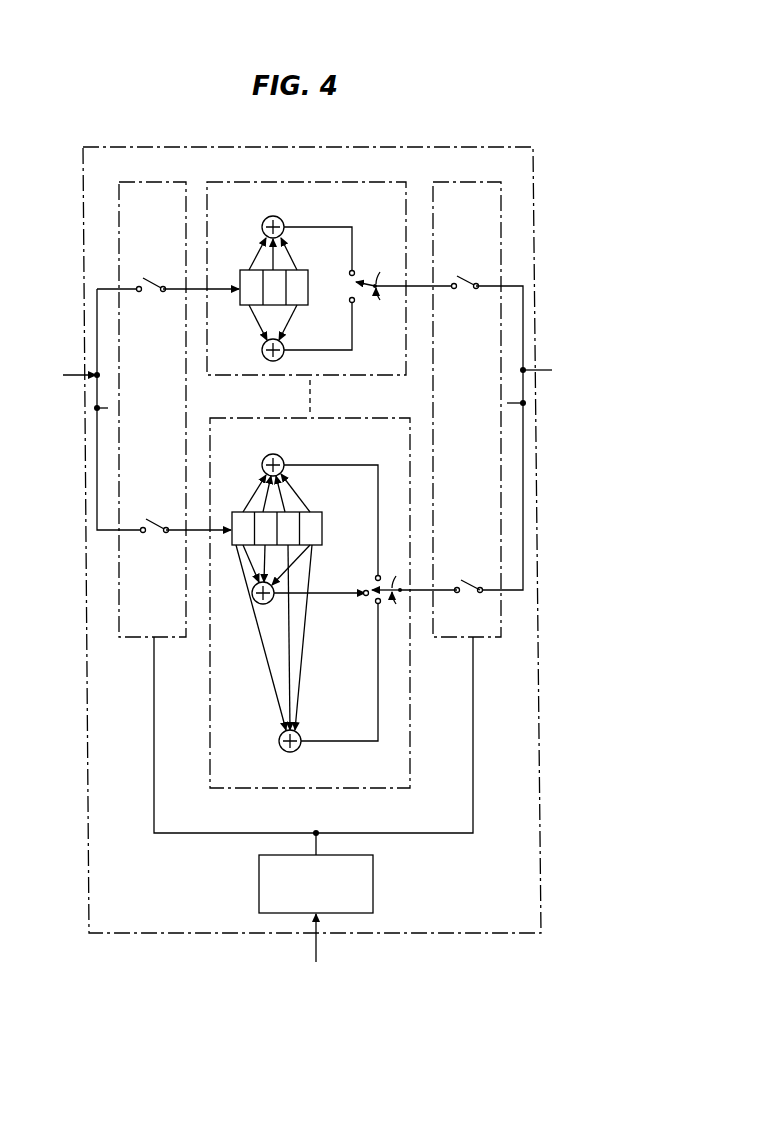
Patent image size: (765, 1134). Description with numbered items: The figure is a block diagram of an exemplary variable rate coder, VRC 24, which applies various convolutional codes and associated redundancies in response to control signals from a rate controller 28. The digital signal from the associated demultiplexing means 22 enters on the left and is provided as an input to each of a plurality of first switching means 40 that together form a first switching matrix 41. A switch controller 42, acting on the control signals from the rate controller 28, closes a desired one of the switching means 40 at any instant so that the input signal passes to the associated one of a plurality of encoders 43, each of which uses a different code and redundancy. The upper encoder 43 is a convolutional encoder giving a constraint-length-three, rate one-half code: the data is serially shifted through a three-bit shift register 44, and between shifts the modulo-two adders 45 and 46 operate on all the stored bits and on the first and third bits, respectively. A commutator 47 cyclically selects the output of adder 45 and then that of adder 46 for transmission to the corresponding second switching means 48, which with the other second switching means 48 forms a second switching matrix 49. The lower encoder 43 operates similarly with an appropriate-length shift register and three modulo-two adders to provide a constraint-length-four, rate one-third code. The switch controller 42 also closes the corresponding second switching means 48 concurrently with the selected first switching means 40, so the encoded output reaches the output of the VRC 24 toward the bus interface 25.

The demultiplexing means 22 is at (20, 406).
The variable rate coder (VRC) 24 is at (519, 915).
The bus interface 25 is at (602, 410).
The rate controller 28 is at (330, 1029).
The first switching means 40 is at (146, 279).
The first switching matrix 41 is at (135, 179).
The switch controller 42 is at (373, 879).
The encoders 43 is at (371, 417).
The three-bit shift register 44 is at (241, 275).
The modulo-2 adder 45 is at (262, 227).
The modulo-2 adder 46 is at (262, 350).
The commutator 47 is at (366, 272).
The second switching means 48 is at (463, 575).
The second switching matrix 49 is at (449, 179).